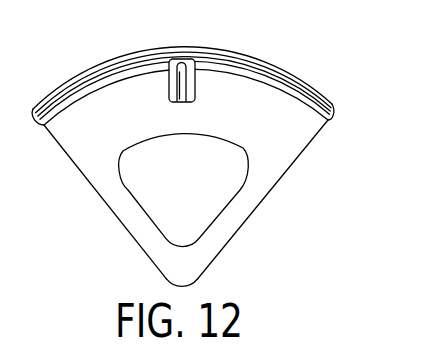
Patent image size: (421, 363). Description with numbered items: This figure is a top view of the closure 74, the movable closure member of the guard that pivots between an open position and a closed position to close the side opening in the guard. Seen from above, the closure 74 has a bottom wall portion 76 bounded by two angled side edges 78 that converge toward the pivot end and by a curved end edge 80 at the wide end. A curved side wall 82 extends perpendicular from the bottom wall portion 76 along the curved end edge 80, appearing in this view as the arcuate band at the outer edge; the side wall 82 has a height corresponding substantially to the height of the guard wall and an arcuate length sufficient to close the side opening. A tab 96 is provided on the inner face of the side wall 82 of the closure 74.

The closure 74 is at (211, 160).
The bottom wall portion 76 is at (182, 211).
The angled side edges 78 is at (90, 183).
The curved end edge 80 is at (276, 92).
The curved side wall 82 is at (194, 93).
The tab 96 is at (168, 92).